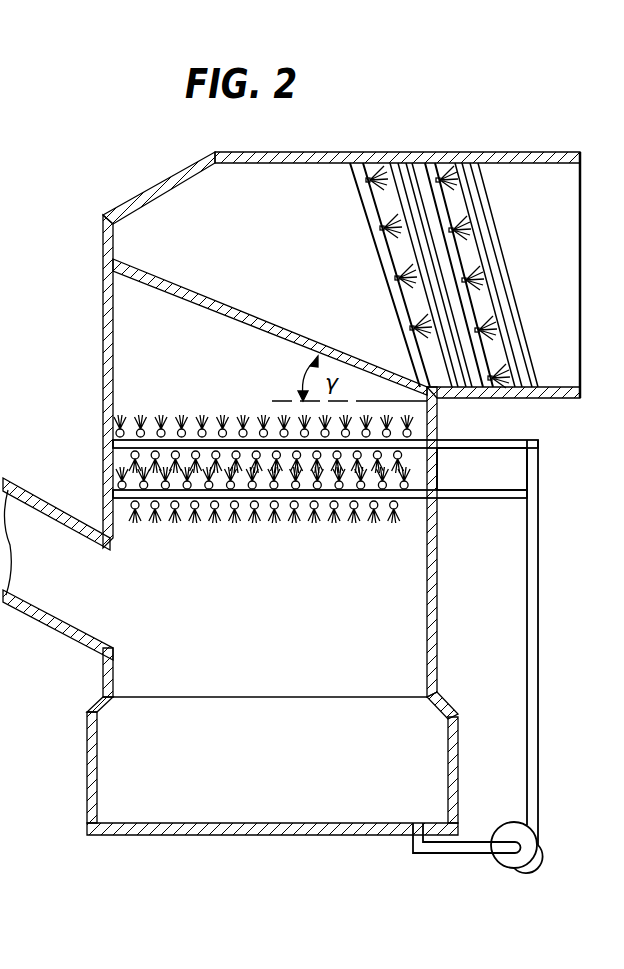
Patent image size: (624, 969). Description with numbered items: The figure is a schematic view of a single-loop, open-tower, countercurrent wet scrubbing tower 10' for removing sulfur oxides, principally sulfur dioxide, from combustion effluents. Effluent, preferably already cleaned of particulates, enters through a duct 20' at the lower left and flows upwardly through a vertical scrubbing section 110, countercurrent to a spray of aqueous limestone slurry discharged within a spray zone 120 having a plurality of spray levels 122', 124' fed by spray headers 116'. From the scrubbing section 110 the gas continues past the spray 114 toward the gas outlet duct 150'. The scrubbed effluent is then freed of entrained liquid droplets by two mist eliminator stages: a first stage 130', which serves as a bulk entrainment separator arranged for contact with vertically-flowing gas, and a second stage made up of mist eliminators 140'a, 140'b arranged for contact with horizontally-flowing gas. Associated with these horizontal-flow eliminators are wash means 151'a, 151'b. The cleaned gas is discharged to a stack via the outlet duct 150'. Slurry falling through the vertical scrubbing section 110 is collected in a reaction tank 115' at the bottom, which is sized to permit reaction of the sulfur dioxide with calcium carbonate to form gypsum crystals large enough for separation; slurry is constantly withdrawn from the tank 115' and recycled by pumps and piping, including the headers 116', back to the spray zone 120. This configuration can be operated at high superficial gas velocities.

The wet scrubbing tower 10' is at (341, 338).
The gas outlet duct 150' is at (503, 275).
The mist eliminator stage 140'a is at (411, 244).
The mist eliminator stage 140'b is at (483, 244).
The wash means 151'a is at (334, 252).
The wash means 151'b is at (526, 300).
The mist eliminator stage 130' is at (270, 323).
The spray zone 120 is at (276, 464).
The spray 114 is at (245, 426).
The spray level 122' is at (263, 396).
The spray level 124' is at (320, 531).
The spray header 116' is at (487, 642).
The vertical scrubbing section 110 is at (568, 703).
The duct 20' is at (56, 571).
The reaction tank 115' is at (272, 741).